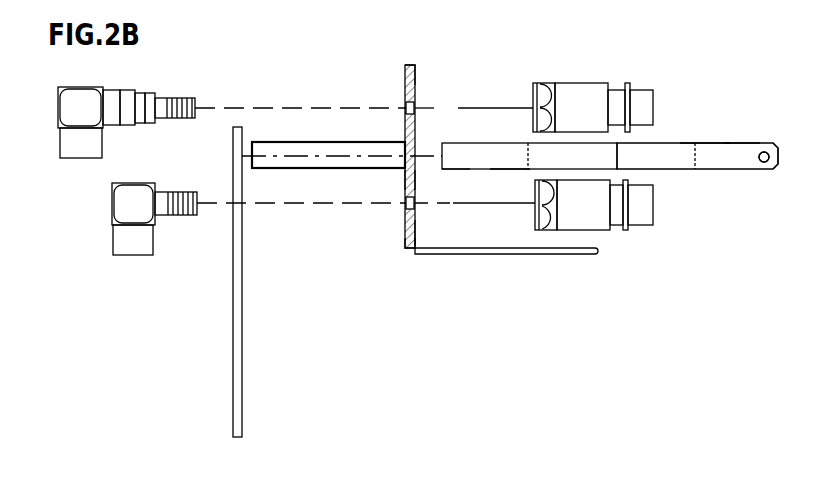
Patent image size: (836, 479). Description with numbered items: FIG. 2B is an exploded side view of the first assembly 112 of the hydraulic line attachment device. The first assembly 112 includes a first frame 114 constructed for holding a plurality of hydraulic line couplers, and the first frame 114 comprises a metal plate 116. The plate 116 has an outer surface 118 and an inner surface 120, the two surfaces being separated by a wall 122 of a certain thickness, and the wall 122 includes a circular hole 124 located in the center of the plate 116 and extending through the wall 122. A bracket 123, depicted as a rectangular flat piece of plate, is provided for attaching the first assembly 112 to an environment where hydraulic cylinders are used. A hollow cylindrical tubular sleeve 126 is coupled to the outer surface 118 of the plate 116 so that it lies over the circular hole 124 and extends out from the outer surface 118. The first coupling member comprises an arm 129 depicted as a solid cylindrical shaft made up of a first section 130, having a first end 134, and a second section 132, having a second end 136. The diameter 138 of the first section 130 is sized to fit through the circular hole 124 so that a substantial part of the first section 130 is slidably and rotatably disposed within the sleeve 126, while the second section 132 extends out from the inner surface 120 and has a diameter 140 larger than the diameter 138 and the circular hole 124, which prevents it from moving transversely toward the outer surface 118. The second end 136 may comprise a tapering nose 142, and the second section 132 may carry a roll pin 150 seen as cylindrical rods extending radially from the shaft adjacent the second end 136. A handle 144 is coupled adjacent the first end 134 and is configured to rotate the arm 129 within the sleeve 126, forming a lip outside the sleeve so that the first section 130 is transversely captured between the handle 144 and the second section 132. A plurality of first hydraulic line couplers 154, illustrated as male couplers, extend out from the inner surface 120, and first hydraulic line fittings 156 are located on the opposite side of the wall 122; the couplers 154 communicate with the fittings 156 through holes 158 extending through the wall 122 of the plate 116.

The first assembly 112 is at (396, 345).
The first frame 114 is at (411, 70).
The plate 116 is at (415, 73).
The outer surface 118 is at (405, 180).
The inner surface 120 is at (416, 231).
The wall 122 is at (410, 249).
The bracket 123 is at (600, 252).
The circular hole 124 is at (418, 138).
The hollow cylindrical tubular sleeve 126 is at (327, 141).
The arm 129 is at (737, 147).
The first section 130 is at (512, 171).
The second section 132 is at (703, 130).
The first end 134 is at (452, 171).
The second end 136 is at (766, 162).
The diameter of the first section 138 is at (529, 156).
The diameter of the second section 140 is at (697, 156).
The tapering nose 142 is at (776, 143).
The handle 144 is at (235, 428).
The roll pin 150 is at (761, 161).
The first hydraulic line couplers 154 is at (595, 190).
The first hydraulic line fittings 156 is at (82, 122).
The holes 158 is at (407, 100).